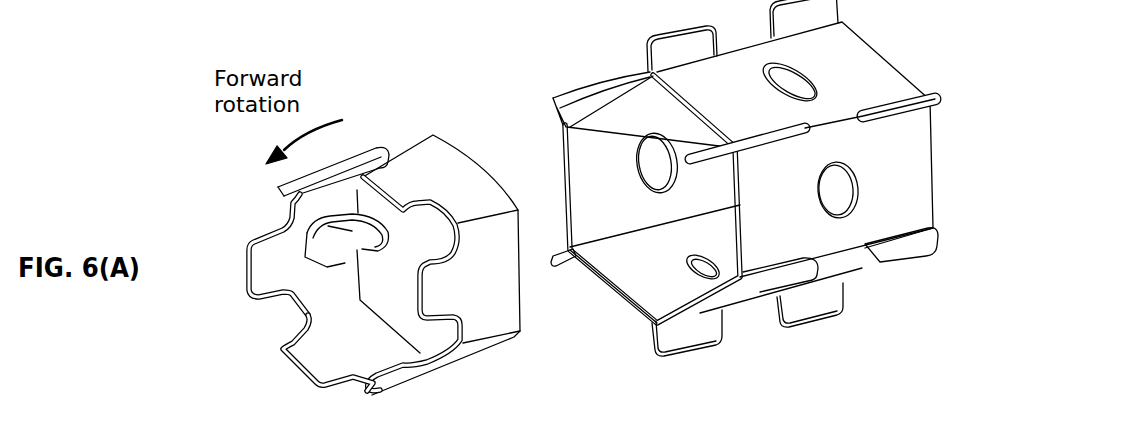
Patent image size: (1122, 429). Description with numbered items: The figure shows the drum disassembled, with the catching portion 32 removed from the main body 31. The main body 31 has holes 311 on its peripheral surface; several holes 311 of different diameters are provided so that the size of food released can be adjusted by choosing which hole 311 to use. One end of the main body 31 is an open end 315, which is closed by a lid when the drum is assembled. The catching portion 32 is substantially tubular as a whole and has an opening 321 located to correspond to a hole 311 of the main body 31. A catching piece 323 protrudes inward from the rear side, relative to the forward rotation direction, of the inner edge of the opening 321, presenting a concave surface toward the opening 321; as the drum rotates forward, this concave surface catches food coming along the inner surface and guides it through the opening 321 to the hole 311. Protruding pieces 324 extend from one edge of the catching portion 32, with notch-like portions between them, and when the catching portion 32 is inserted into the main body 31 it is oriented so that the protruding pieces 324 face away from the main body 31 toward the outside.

The main body 31 is at (587, 100).
The hole 311 is at (642, 161).
The open end 315 is at (614, 284).
The catching portion 32 is at (402, 148).
The opening 321 is at (312, 272).
The catching piece 323 is at (327, 233).
The protruding piece 324 is at (318, 355).